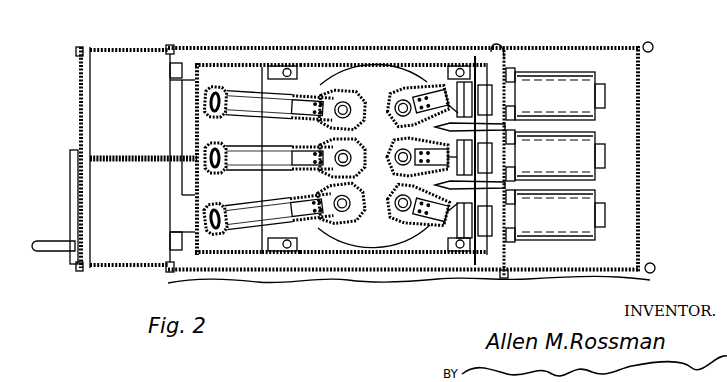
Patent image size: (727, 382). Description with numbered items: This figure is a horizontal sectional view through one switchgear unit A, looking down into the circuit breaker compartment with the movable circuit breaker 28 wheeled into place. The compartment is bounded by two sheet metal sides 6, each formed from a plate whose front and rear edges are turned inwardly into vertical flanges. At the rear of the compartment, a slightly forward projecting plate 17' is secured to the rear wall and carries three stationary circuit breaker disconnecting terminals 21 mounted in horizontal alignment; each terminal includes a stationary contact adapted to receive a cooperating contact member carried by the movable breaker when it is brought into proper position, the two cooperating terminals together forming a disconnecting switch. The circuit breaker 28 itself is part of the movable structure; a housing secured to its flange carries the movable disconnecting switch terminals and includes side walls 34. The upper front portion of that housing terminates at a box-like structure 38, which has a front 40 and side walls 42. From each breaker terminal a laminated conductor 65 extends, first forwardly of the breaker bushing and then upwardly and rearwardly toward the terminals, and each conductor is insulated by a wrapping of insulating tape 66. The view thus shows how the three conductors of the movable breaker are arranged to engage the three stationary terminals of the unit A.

The sheet metal side 6 is at (392, 45).
The forward projecting plate 17' is at (531, 147).
The circuit breaker disconnecting terminal 21 is at (585, 72).
The circuit breaker 28 is at (393, 82).
The side wall 34 is at (327, 63).
The box-like structure 38 is at (218, 252).
The front 40 is at (200, 103).
The side wall 42 is at (228, 62).
The laminated conductor 65 is at (296, 106).
The insulating tape 66 is at (256, 98).
The unit A is at (647, 106).